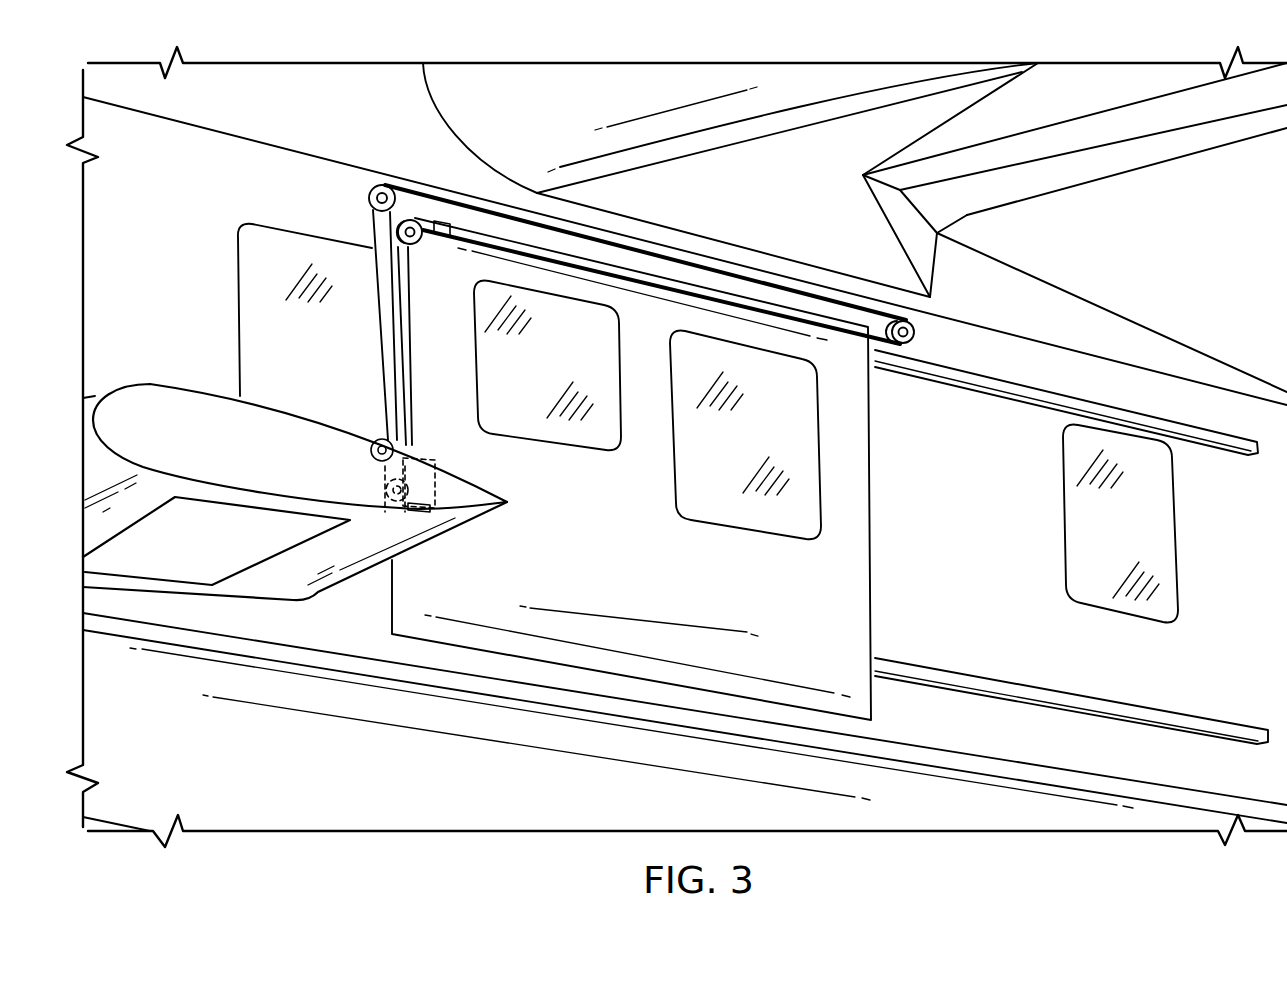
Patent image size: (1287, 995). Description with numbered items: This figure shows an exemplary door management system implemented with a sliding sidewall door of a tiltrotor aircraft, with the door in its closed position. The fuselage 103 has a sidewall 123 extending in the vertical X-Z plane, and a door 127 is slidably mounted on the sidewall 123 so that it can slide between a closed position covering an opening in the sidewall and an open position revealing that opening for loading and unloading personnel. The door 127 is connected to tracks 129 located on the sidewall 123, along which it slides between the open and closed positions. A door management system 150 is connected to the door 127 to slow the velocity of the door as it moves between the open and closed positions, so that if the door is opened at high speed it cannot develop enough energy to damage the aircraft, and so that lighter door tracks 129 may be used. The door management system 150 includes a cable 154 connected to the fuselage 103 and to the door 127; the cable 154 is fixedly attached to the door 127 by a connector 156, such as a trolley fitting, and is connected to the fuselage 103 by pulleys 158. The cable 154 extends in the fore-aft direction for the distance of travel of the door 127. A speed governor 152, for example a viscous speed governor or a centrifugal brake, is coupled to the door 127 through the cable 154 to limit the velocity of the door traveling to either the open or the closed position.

The fuselage 103 is at (260, 100).
The sidewall 123 is at (1268, 546).
The door 127 is at (856, 578).
The tracks 129 is at (977, 376).
The door management system 150 is at (361, 382).
The speed governor 152 is at (445, 490).
The cable 154 is at (743, 274).
The connector 156 is at (445, 240).
The pulleys 158 is at (369, 198).